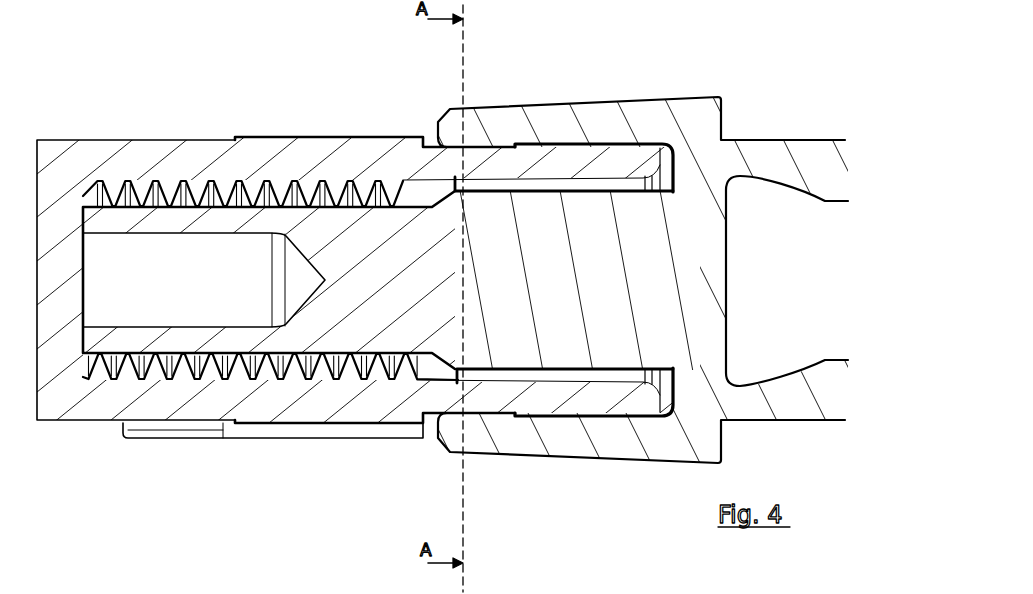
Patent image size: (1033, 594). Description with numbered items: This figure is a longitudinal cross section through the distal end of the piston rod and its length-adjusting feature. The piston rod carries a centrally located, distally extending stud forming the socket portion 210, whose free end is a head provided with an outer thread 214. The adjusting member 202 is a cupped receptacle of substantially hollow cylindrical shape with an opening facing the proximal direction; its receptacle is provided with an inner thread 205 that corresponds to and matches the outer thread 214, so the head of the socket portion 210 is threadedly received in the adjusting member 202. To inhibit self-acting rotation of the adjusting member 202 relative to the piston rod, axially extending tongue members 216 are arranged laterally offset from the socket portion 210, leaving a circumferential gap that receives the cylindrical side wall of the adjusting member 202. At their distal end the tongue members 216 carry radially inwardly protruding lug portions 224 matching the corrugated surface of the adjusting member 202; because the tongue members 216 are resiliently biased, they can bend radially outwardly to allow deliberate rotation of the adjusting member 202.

The adjusting member 202 is at (192, 160).
The inner thread 205 is at (352, 207).
The socket portion 210 is at (410, 322).
The outer thread 214 is at (328, 366).
The tongue members 216 is at (572, 105).
The lug portions 224 is at (480, 145).